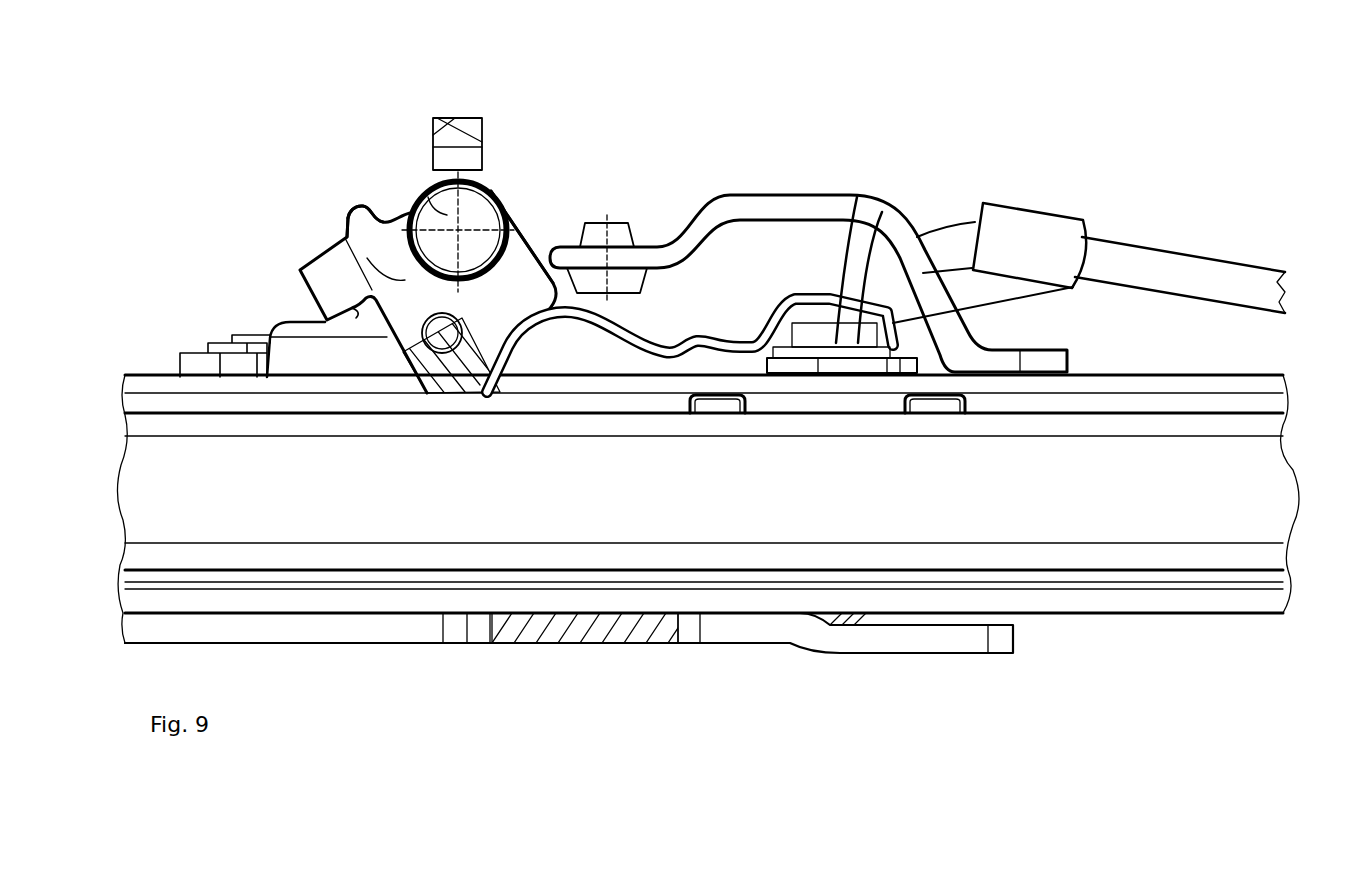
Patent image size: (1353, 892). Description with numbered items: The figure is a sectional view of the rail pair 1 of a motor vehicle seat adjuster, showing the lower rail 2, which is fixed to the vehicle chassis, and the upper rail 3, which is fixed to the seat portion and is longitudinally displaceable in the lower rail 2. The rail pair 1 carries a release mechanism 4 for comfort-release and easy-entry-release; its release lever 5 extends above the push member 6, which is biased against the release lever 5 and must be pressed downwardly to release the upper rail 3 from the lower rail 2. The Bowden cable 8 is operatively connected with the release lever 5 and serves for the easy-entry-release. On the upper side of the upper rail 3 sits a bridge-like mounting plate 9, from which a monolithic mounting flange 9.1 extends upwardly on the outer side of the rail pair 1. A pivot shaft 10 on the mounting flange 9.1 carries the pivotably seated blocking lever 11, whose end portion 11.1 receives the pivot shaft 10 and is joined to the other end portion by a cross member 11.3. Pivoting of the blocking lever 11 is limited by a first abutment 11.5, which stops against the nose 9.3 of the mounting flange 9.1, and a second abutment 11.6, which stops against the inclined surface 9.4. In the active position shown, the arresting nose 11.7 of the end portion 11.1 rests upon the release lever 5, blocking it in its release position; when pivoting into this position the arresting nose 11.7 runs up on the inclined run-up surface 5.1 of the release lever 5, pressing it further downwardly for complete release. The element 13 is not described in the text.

The rail pair 1 is at (1126, 682).
The lower rail 2 is at (1067, 605).
The upper rail 3 is at (150, 373).
The release mechanism 4 is at (640, 66).
The release lever 5 is at (708, 340).
The inclined run-up surface 5.1 is at (540, 345).
The push member 6 is at (833, 343).
The Bowden cable 8 is at (1102, 238).
The mounting plate 9 is at (770, 207).
The mounting flange 9.1 is at (350, 352).
The nose 9.3 is at (465, 125).
The inclined surface 9.4 is at (352, 318).
The pivot shaft 10 is at (423, 193).
The blocking lever 11 is at (500, 215).
The end portion 11.1 is at (350, 217).
The cross member 11.3 is at (443, 365).
The first abutment 11.5 is at (363, 218).
The second abutment 11.6 is at (337, 300).
The arresting nose 11.7 is at (522, 260).
The insert block 13 is at (528, 643).